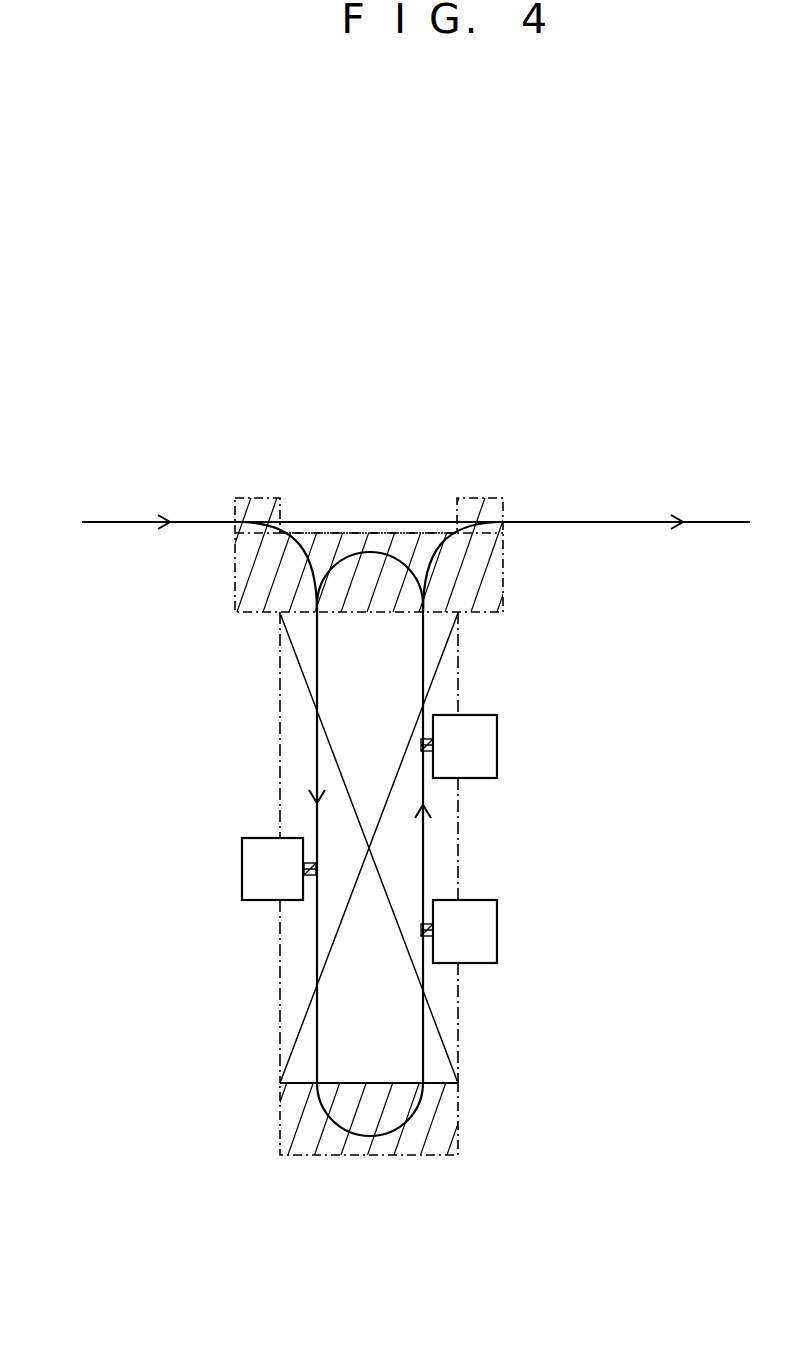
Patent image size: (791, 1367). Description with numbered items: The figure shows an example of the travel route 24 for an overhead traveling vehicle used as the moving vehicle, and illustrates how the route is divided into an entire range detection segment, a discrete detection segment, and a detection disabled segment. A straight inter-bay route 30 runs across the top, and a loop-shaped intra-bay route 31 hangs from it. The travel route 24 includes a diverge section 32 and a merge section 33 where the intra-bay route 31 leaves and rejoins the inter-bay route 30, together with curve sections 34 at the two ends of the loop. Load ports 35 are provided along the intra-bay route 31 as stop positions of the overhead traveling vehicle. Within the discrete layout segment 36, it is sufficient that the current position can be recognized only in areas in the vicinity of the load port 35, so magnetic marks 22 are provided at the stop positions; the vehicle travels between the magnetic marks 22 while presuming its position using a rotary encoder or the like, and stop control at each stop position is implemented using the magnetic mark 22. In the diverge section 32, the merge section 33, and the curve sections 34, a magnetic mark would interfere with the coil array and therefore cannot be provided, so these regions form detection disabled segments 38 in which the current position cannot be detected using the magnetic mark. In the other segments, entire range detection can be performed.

The travel route 24 is at (354, 1318).
The inter-bay route 30 is at (573, 522).
The intra-bay route 31 is at (423, 843).
The diverge section 32 is at (297, 547).
The merge section 33 is at (437, 557).
The curve section 34 is at (360, 615).
The load port 35 is at (242, 870).
The discrete layout segment 36 is at (458, 1019).
The detection disabled segment 38 is at (353, 526).
The magnetic mark 22 is at (425, 747).